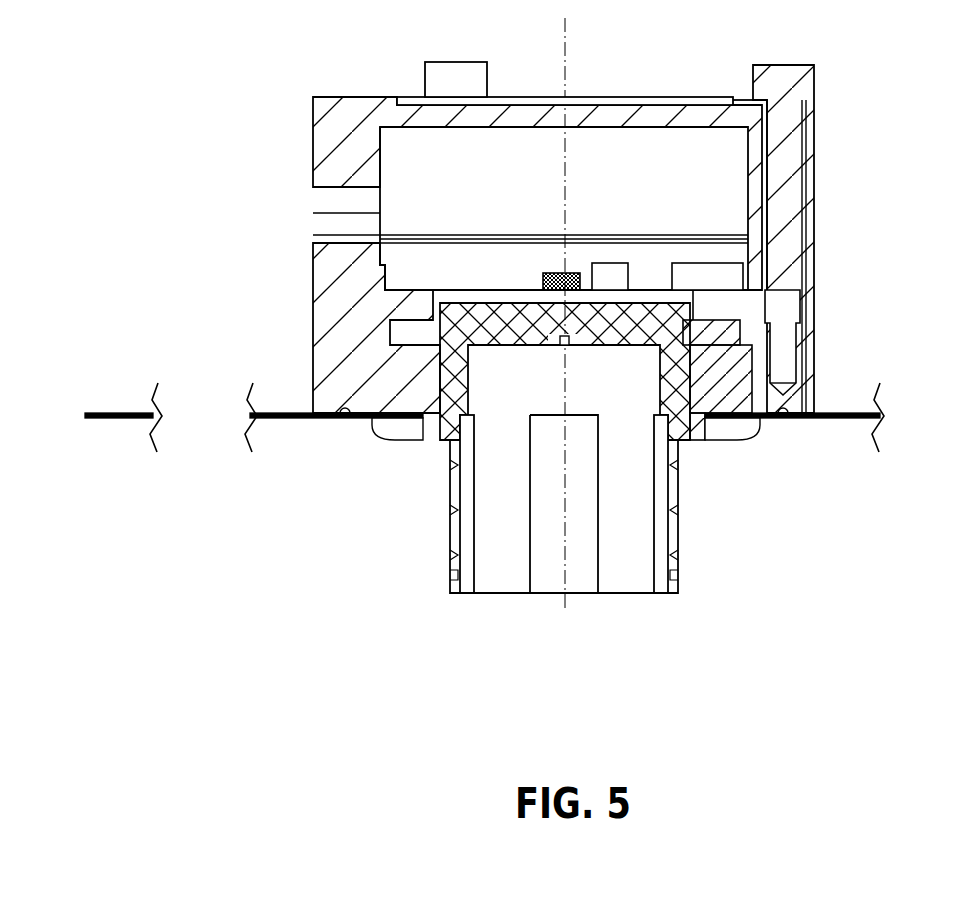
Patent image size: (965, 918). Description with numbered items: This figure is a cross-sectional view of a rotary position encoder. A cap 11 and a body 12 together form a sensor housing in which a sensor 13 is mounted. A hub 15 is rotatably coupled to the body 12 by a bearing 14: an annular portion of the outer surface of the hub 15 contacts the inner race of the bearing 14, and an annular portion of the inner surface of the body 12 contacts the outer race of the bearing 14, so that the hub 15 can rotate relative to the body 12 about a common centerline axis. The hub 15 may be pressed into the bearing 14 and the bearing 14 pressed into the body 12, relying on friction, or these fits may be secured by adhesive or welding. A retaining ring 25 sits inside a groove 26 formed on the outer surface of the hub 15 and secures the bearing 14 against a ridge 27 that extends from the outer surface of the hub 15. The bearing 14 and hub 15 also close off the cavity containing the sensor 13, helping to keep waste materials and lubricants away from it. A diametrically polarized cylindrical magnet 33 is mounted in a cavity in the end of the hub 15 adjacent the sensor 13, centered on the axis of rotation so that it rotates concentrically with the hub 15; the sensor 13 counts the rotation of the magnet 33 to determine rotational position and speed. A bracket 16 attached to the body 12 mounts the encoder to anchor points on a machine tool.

The cap 11 is at (313, 145).
The body 12 is at (313, 292).
The sensor 13 is at (567, 272).
The bearing 14 is at (413, 386).
The hub 15 is at (678, 540).
The bracket 16 is at (133, 414).
The retaining ring 25 is at (728, 333).
The groove 26 is at (688, 332).
The ridge 27 is at (694, 428).
The magnet 33 is at (566, 335).